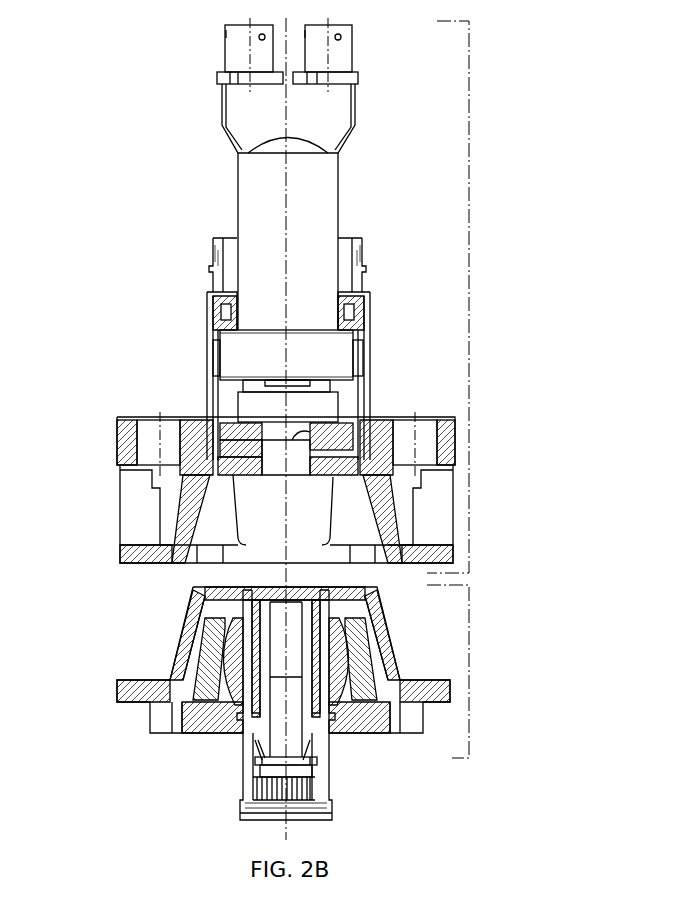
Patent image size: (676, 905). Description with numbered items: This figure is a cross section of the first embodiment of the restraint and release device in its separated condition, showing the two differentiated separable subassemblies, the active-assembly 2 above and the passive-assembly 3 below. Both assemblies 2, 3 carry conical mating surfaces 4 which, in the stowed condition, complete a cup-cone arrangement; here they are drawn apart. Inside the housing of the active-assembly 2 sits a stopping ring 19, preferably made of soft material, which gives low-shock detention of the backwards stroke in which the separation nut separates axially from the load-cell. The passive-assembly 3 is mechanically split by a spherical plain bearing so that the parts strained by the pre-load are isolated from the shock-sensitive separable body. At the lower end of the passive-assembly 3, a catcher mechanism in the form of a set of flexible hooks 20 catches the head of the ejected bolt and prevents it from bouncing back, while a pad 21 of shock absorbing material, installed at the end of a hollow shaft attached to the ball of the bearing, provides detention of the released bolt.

The active-assembly 2 is at (488, 312).
The passive-assembly 3 is at (488, 674).
The conical mating surfaces 4 is at (185, 617).
The stopping ring 19 is at (222, 322).
The flexible hooks 20 is at (307, 737).
The pad 21 is at (272, 790).